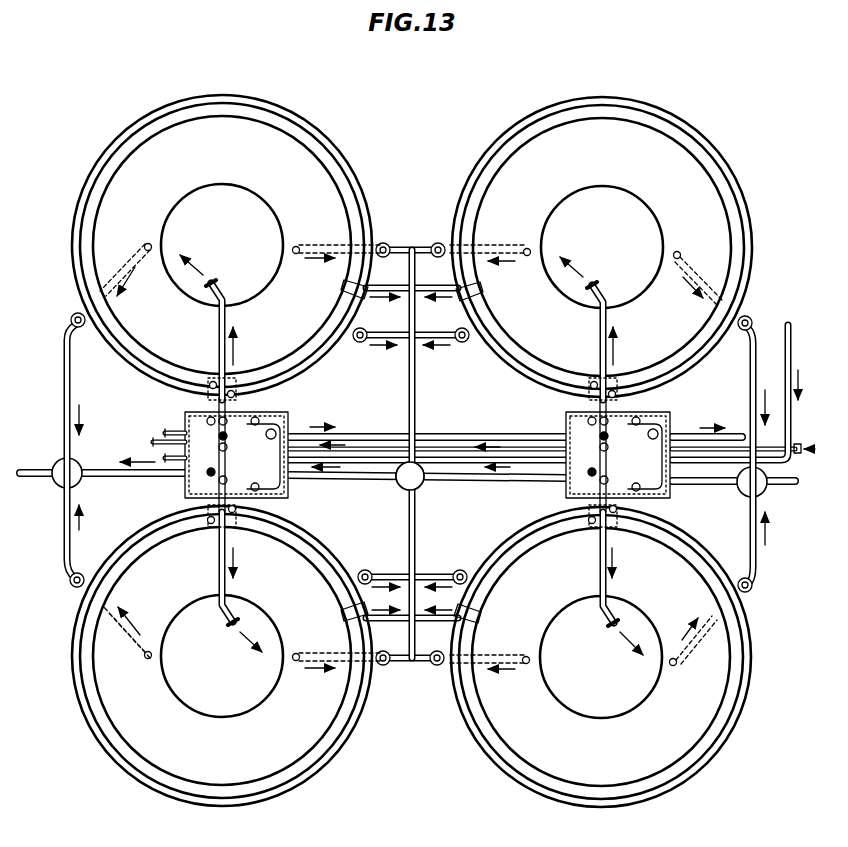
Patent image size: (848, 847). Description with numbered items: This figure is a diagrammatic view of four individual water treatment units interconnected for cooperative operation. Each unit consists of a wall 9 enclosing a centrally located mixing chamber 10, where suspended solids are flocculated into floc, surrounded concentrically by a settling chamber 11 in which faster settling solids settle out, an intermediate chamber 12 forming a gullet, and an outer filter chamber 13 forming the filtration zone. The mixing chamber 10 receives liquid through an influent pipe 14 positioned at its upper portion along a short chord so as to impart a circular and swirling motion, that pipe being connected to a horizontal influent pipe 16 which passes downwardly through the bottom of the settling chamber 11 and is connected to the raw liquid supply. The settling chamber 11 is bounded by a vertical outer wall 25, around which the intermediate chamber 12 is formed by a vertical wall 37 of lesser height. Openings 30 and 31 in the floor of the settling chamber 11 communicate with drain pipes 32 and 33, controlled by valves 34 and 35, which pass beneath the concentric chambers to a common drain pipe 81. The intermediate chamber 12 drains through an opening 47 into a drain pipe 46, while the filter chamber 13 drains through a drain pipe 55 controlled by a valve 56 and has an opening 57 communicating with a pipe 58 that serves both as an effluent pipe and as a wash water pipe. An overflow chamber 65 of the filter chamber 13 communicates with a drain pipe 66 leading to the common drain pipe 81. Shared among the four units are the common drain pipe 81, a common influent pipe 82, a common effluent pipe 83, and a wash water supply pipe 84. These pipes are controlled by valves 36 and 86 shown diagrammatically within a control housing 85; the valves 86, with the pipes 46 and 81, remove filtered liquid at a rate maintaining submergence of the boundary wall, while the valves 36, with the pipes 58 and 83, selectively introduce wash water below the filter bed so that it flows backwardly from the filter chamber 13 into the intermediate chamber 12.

The wall 9 is at (282, 237).
The mixing chamber 10 is at (412, 451).
The settling chamber 11 is at (407, 447).
The intermediate chamber 12 is at (157, 128).
The filter chamber 13 is at (294, 120).
The influent pipe 14 is at (219, 285).
The horizontal influent pipe 16 is at (218, 336).
The vertical outer wall 25 is at (116, 177).
The opening 30 is at (296, 255).
The opening 31 is at (148, 243).
The drain pipe 32 is at (318, 244).
The drain pipe 33 is at (125, 268).
The valve 34 is at (384, 243).
The valve 35 is at (438, 243).
The valve 36 is at (427, 455).
The vertical wall 37 is at (343, 190).
The drain pipe 46 is at (215, 406).
The opening 47 is at (211, 382).
The drain pipe 55 is at (392, 338).
The valve 56 is at (357, 341).
The opening 57 is at (233, 390).
The pipe 58 is at (242, 403).
The overflow chamber 65 is at (350, 289).
The drain pipe 66 is at (394, 286).
The common drain pipe 81 is at (109, 475).
The common influent pipe 82 is at (443, 446).
The common effluent pipe 83 is at (373, 436).
The wash water supply pipe 84 is at (360, 465).
The control housing 85 is at (292, 416).
The valve 86 is at (185, 432).